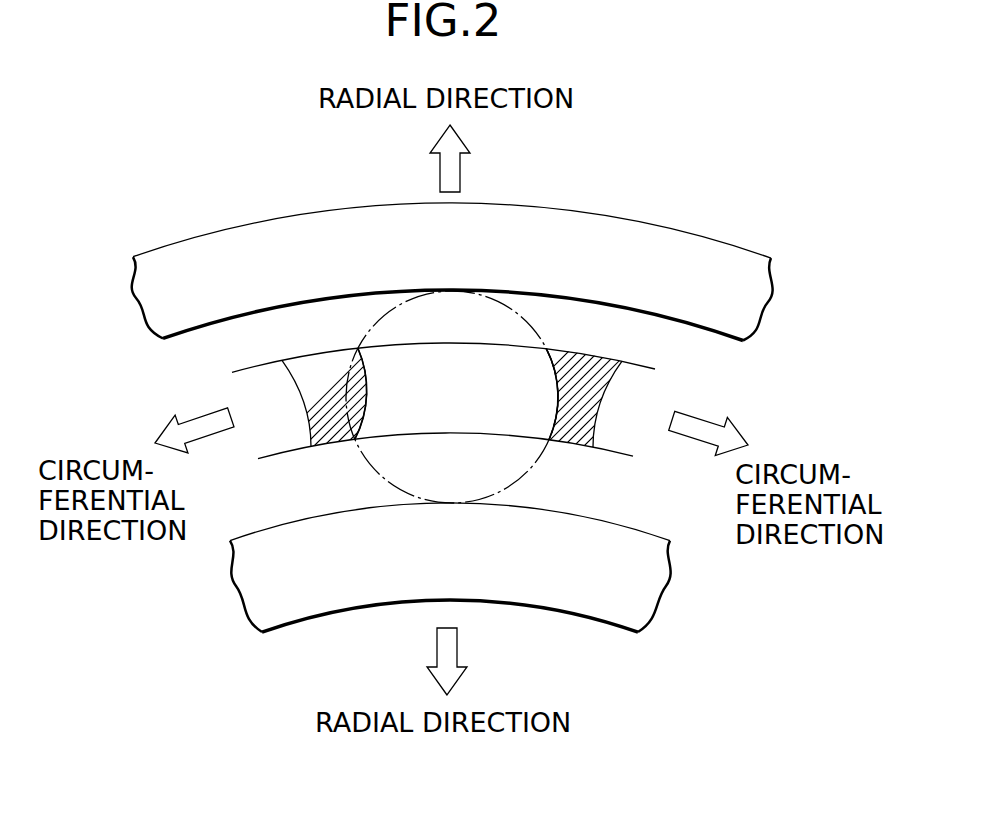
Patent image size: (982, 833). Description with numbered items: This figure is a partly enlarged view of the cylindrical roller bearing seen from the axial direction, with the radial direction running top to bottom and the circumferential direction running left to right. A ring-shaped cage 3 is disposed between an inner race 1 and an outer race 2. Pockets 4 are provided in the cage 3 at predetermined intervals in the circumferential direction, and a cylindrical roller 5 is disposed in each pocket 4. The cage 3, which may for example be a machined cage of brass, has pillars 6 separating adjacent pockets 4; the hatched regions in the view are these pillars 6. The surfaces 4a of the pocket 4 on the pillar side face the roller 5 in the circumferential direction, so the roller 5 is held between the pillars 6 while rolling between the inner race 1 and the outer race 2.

The inner race 1 is at (643, 587).
The outer race 2 is at (740, 288).
The cage 3 is at (641, 366).
The pocket 4 is at (383, 432).
The pocket surface 4a is at (347, 383).
The cylindrical roller 5 is at (527, 318).
The pillar 6 is at (302, 373).